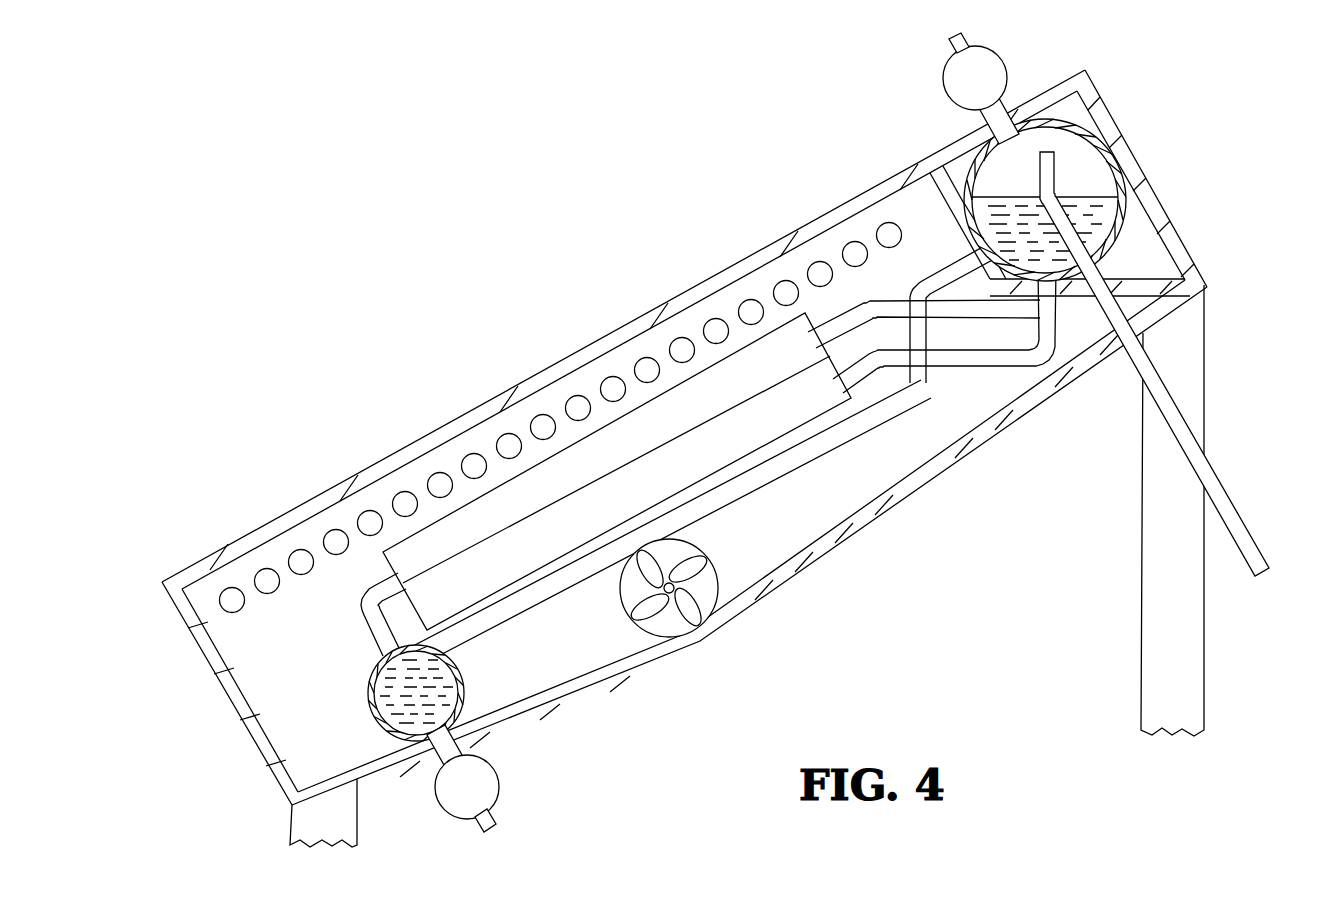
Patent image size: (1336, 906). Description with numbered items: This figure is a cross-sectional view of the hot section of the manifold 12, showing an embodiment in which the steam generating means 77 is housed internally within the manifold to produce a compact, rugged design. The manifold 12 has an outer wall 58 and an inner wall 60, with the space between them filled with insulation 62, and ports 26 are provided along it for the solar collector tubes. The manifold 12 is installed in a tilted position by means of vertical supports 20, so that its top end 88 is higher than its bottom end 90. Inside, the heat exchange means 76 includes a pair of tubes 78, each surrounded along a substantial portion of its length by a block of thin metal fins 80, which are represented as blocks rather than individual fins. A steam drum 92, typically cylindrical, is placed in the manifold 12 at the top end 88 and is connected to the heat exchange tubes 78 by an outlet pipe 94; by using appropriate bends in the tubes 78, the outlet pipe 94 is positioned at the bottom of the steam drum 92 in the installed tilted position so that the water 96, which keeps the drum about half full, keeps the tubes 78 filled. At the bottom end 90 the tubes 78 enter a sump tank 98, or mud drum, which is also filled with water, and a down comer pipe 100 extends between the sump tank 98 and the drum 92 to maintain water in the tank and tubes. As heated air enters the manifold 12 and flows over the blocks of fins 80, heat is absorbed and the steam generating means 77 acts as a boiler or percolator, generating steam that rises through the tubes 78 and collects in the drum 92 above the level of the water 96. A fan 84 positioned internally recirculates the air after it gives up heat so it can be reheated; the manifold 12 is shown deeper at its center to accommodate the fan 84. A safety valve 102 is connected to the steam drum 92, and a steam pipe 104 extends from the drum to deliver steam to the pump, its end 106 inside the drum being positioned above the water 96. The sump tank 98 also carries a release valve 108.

The manifold 12 is at (672, 690).
The vertical supports 20 is at (291, 814).
The ports 26 is at (617, 373).
The outer wall 58 is at (268, 524).
The inner wall 60 is at (312, 517).
The insulation 62 is at (390, 476).
The heat exchange means 76 is at (340, 625).
The steam generating means 77 is at (857, 562).
The heat exchange tubes 78 is at (990, 323).
The blocks of thin metal fins 80 is at (609, 474).
The fan 84 is at (716, 562).
The top end 88 is at (1128, 152).
The bottom end 90 is at (228, 702).
The steam drum 92 is at (1125, 233).
The outlet pipe 94 is at (1062, 330).
The water 96 is at (1118, 184).
The sump tank 98 is at (370, 712).
The down comer pipe 100 is at (558, 606).
The safety valve 102 is at (946, 100).
The steam pipe 104 is at (1224, 492).
The end of steam pipe 106 is at (1052, 160).
The release valve 108 is at (500, 780).